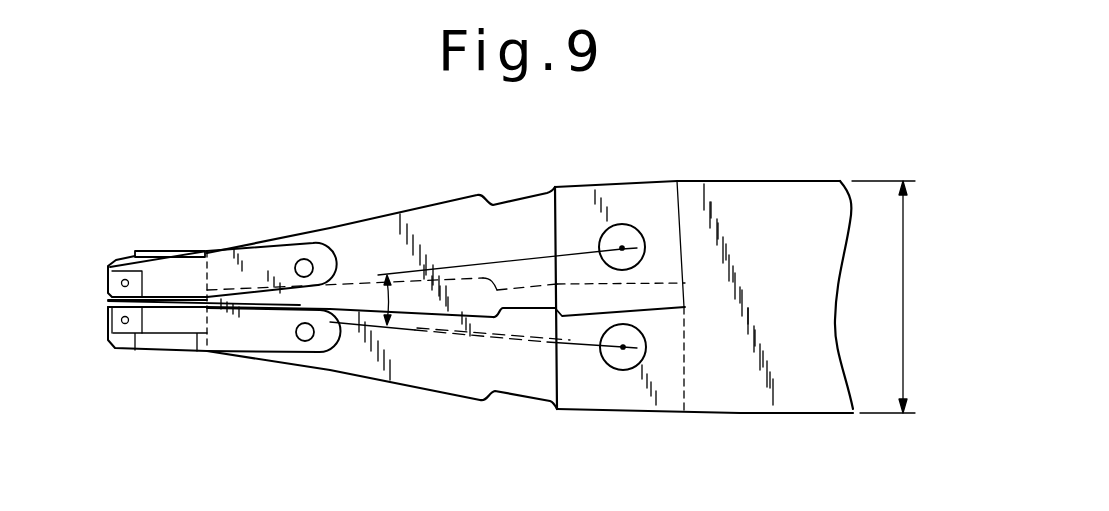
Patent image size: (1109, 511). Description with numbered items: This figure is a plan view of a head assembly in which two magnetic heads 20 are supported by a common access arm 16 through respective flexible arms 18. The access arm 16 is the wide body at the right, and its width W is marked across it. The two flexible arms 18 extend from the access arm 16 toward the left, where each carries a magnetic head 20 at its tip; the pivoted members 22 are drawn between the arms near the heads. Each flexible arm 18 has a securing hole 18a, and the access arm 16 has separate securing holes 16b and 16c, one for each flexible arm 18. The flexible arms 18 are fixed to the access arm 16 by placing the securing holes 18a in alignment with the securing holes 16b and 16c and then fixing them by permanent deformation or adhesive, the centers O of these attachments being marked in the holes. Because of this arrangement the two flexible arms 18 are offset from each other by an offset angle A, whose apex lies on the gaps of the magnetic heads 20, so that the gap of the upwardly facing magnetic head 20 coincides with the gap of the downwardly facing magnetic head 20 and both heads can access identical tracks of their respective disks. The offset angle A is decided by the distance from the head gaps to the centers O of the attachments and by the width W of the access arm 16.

The access arm 16 is at (740, 393).
The securing hole 16b is at (622, 238).
The securing hole 16c is at (620, 357).
The securing hole 18a is at (656, 296).
The flexible arm 18 is at (380, 230).
The magnetic head 20 is at (178, 250).
The lever arm 22 is at (263, 258).
The center of attachment O is at (600, 238).
The offset angle A is at (391, 297).
The width of the access arm W is at (892, 297).